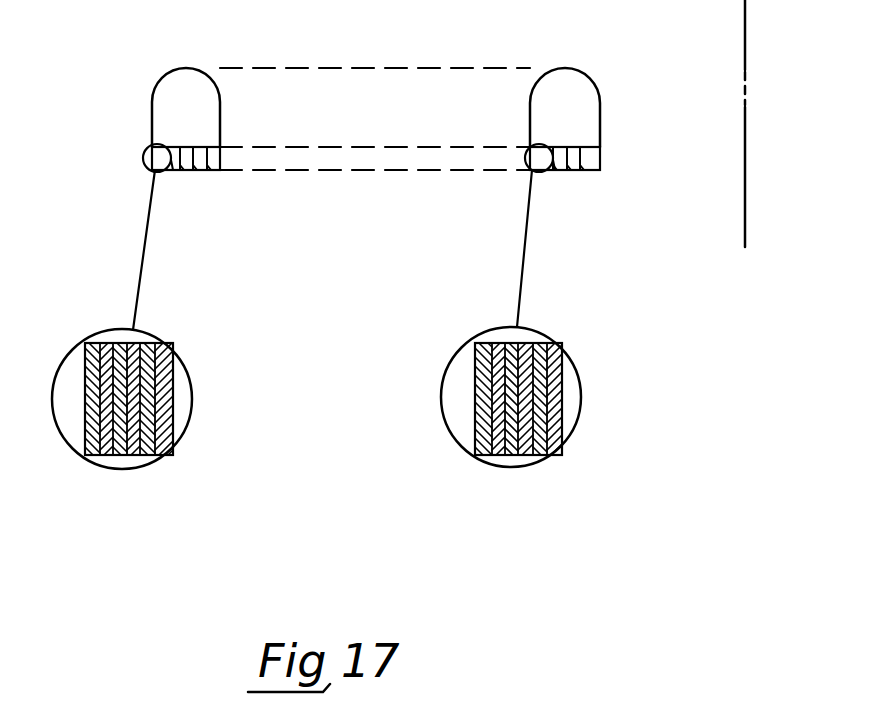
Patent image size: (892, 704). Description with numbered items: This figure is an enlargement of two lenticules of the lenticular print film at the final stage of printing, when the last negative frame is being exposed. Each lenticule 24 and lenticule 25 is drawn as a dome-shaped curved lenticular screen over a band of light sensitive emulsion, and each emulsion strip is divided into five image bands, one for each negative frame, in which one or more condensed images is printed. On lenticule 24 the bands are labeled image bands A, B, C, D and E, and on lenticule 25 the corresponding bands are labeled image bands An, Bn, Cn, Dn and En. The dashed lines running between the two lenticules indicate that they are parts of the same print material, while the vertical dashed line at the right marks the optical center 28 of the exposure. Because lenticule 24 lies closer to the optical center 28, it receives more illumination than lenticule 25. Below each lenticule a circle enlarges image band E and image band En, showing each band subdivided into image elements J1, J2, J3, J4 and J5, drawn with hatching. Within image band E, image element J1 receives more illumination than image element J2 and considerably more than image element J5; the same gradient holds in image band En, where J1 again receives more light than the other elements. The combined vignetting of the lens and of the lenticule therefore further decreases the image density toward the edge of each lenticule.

The lenticule 24 is at (566, 78).
The lenticule 25 is at (192, 78).
The optical center 28 is at (745, 32).
The image band A is at (582, 170).
The image band B is at (575, 170).
The image band C is at (567, 170).
The image band D is at (557, 170).
The image band E is at (548, 170).
The image band An is at (207, 170).
The image band Bn is at (196, 170).
The image band Cn is at (186, 170).
The image band Dn is at (176, 170).
The image band En is at (166, 170).
The image element J1 is at (583, 548).
The image element J2 is at (550, 548).
The image element J3 is at (513, 548).
The image element J4 is at (477, 548).
The image element J5 is at (442, 548).